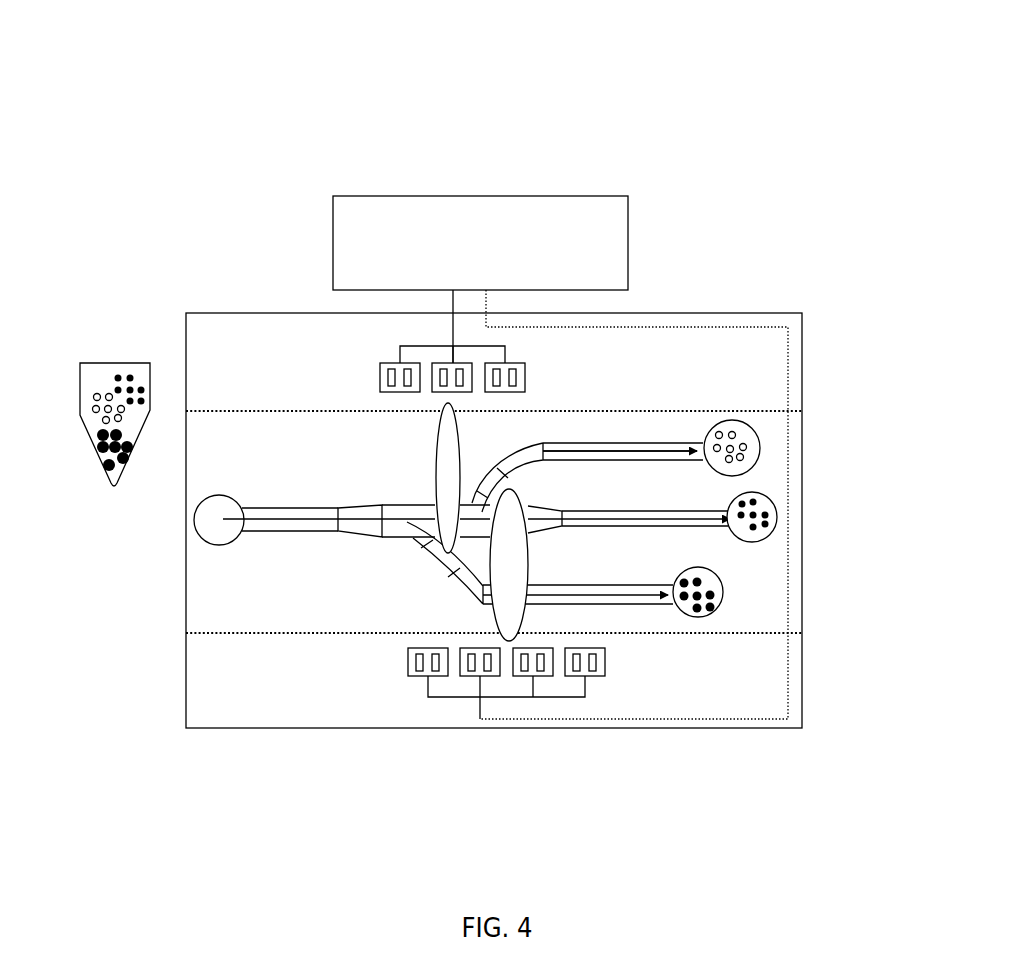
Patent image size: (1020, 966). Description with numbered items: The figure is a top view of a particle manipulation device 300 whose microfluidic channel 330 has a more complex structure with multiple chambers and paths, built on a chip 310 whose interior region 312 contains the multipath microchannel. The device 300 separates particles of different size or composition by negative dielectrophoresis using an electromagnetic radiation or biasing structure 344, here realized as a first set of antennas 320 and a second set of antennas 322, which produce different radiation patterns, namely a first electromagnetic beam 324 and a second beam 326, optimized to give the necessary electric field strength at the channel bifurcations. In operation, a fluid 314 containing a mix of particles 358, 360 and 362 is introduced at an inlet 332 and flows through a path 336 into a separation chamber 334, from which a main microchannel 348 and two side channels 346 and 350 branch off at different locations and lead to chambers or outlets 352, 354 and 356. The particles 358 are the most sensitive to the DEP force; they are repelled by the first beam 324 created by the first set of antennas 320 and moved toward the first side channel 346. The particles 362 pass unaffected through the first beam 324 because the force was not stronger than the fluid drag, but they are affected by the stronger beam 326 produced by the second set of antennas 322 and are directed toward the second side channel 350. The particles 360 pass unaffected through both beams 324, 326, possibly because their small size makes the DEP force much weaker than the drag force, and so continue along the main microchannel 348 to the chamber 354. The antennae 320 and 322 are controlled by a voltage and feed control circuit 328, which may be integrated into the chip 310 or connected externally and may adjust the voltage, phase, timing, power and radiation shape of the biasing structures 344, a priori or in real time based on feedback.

The device 300 is at (500, 38).
The chip 310 is at (262, 306).
The interior chamber 312 is at (212, 600).
The fluid 314 is at (92, 382).
The first set of antennas 320 is at (525, 375).
The second set of antennas 322 is at (552, 648).
The first electromagnetic beam 324 is at (437, 453).
The second beam 326 is at (533, 567).
The voltage and feed control circuit 328 is at (628, 233).
The microfluidic channel 330 is at (337, 536).
The inlet 332 is at (218, 495).
The separation chamber 334 is at (394, 533).
The path 336 is at (303, 508).
The biasing structure 344 is at (388, 352).
The first side channel 346 is at (452, 587).
The main microchannel 348 is at (647, 510).
The second side channel 350 is at (625, 442).
The chamber 352 is at (790, 576).
The chamber 354 is at (806, 501).
The chamber 356 is at (808, 436).
The particles 358 is at (703, 578).
The particles 360 is at (755, 504).
The particles 362 is at (735, 434).